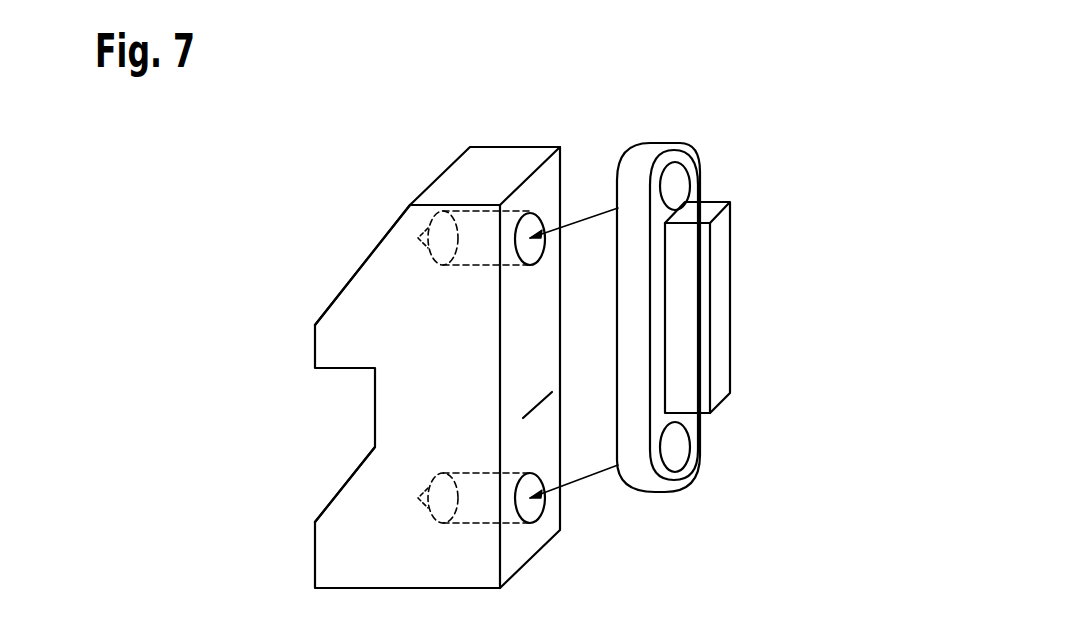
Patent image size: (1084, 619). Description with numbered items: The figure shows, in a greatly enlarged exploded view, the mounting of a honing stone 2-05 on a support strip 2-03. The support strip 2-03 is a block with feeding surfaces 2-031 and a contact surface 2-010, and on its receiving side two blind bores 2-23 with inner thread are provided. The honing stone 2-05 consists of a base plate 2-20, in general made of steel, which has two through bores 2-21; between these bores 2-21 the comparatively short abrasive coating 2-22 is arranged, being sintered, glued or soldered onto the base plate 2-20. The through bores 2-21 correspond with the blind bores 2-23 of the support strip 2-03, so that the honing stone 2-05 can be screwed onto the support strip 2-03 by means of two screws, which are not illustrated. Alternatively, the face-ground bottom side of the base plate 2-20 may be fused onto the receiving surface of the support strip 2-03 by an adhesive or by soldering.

The honing stone 2-05 is at (767, 132).
The support strip 2-03 is at (353, 563).
The inclined faces of base body 2-031 is at (336, 297).
The blind bores 2-23 is at (492, 233).
The notch 2-010 is at (523, 418).
The base plate 2-20 is at (632, 362).
The through bores 2-21 is at (670, 206).
The abrasive coating 2-22 is at (690, 280).